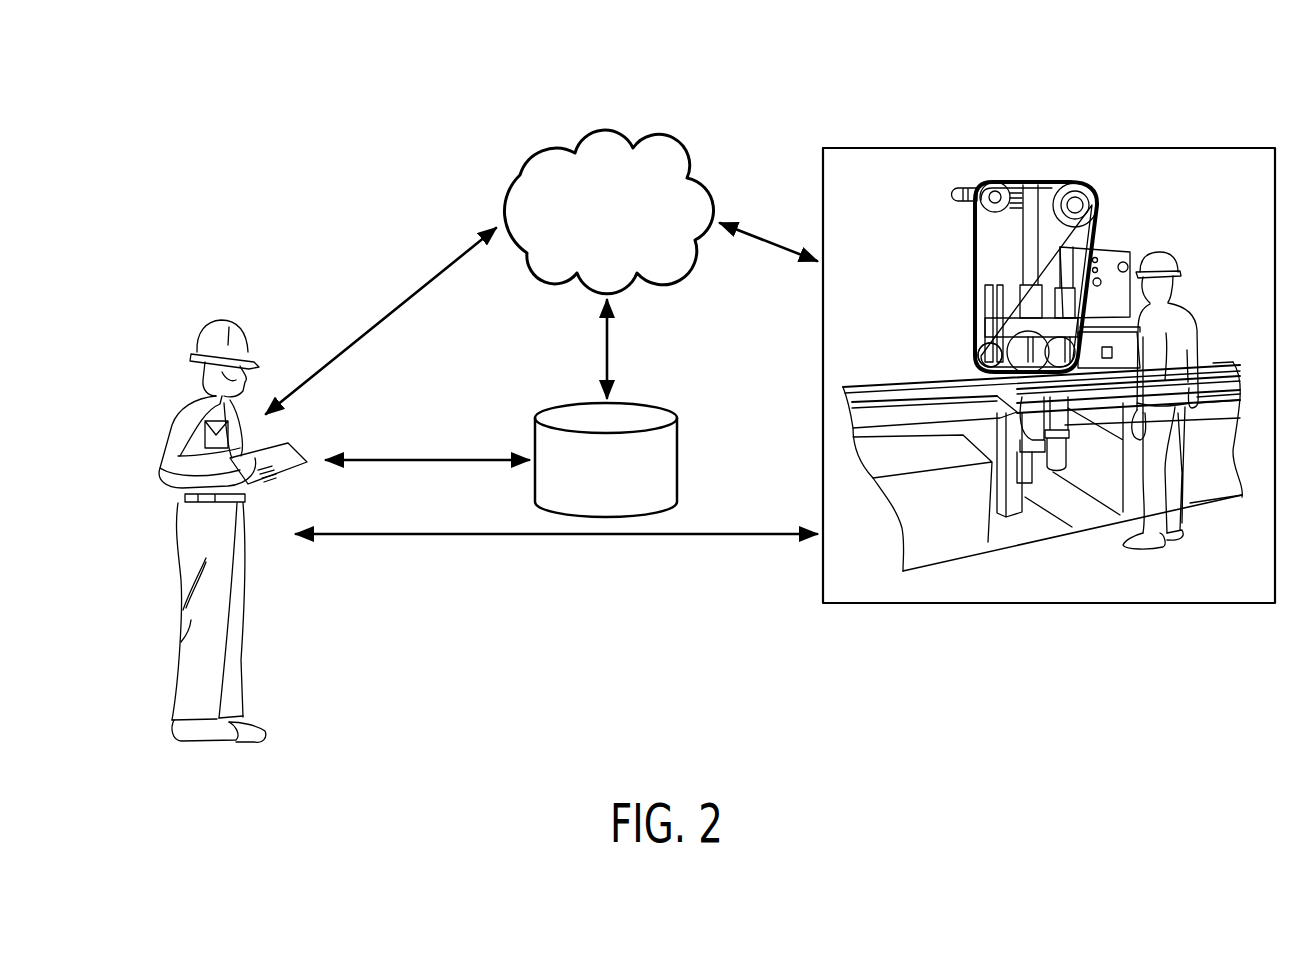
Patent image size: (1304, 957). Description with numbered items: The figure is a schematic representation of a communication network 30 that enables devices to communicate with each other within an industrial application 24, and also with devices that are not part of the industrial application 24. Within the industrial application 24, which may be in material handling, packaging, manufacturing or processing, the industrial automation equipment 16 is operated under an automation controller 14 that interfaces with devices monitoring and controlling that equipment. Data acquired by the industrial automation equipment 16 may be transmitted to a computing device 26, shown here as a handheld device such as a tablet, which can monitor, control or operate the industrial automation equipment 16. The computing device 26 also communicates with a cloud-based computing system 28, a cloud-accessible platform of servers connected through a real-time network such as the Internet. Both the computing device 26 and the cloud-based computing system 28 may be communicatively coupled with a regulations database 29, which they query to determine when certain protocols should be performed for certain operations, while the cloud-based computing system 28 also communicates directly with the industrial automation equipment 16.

The automation controller 14 is at (1110, 248).
The industrial automation equipment 16 is at (965, 202).
The industrial application 24 is at (1050, 148).
The computing device 26 is at (306, 450).
The cloud-based computing system 28 is at (603, 130).
The regulations database 29 is at (681, 398).
The communication network 30 is at (782, 132).